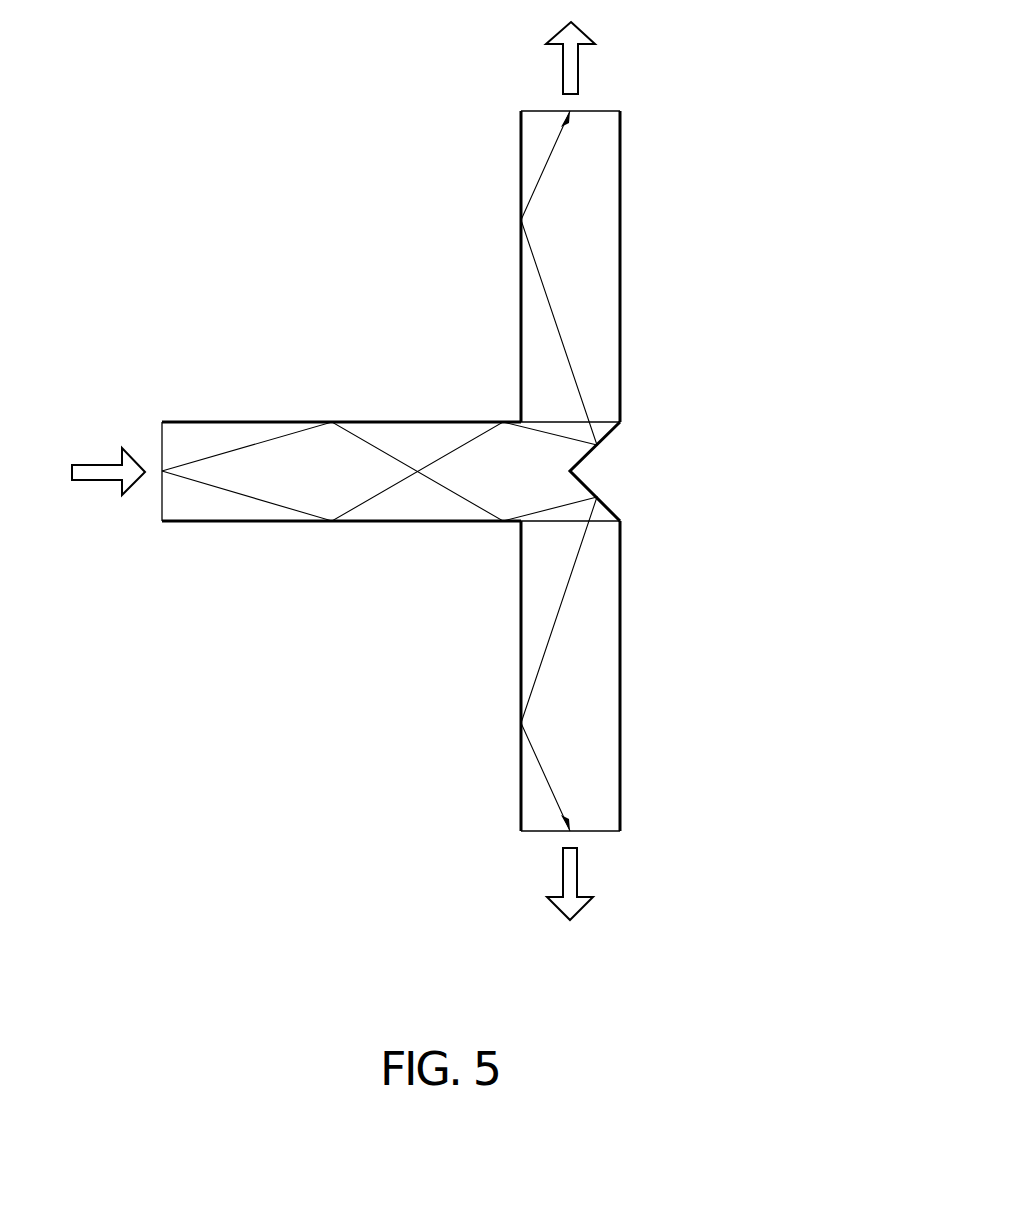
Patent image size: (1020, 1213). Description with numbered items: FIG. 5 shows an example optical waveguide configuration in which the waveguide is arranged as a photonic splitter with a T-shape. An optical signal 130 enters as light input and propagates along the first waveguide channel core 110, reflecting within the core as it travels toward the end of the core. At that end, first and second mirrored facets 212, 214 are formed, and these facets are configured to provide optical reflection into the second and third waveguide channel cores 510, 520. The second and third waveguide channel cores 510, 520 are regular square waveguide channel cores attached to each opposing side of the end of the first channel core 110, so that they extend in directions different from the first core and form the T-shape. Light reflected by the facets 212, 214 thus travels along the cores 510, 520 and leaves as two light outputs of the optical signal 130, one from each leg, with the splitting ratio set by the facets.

The first waveguide channel core 110 is at (213, 418).
The second waveguide channel core 510 is at (625, 265).
The third waveguide channel core 520 is at (625, 675).
The first mirrored facet 212 is at (659, 471).
The second mirrored facet 214 is at (632, 472).
The optical signal 130 is at (420, 471).